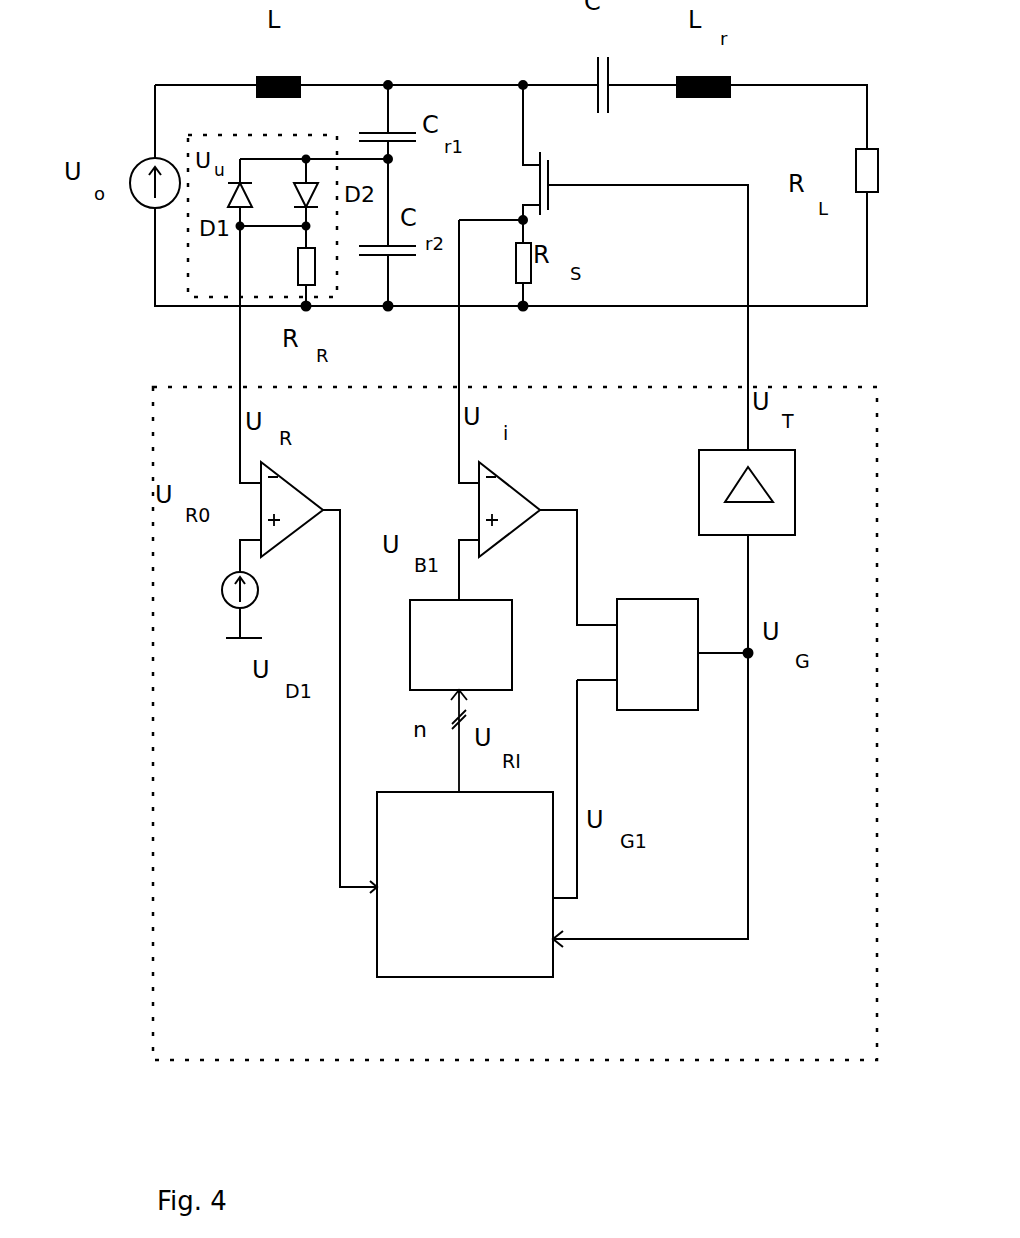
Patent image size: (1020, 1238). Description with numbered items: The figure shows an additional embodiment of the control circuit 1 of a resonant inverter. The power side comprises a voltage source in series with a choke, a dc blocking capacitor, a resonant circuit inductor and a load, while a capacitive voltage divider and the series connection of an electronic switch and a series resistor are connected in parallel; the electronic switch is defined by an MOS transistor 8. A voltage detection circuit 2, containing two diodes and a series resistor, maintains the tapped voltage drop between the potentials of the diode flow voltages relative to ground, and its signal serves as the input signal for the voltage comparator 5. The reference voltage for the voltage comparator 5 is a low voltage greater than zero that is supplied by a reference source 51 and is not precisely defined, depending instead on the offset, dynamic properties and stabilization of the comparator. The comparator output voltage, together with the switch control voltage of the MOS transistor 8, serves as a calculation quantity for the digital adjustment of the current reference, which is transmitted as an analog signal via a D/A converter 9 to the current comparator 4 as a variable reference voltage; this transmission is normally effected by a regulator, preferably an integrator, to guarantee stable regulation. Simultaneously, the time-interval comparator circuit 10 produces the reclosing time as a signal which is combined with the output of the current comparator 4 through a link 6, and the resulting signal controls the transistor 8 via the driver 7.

The control circuit 1 is at (210, 968).
The voltage detection circuit 2 is at (215, 272).
The current comparator 4 is at (513, 493).
The voltage comparator 5 is at (297, 497).
The link 6 is at (639, 608).
The driver 7 is at (787, 473).
The MOS transistor 8 is at (550, 172).
The D/A converter 9 is at (413, 673).
The time-interval comparator circuit 10 is at (390, 952).
The reference voltage source 51 is at (225, 600).